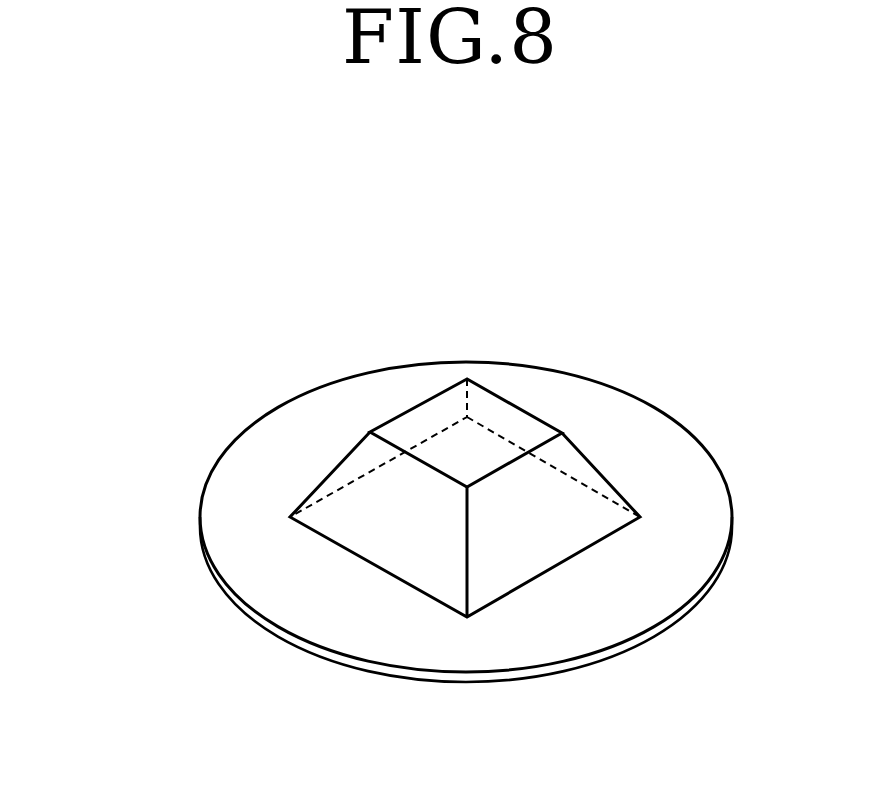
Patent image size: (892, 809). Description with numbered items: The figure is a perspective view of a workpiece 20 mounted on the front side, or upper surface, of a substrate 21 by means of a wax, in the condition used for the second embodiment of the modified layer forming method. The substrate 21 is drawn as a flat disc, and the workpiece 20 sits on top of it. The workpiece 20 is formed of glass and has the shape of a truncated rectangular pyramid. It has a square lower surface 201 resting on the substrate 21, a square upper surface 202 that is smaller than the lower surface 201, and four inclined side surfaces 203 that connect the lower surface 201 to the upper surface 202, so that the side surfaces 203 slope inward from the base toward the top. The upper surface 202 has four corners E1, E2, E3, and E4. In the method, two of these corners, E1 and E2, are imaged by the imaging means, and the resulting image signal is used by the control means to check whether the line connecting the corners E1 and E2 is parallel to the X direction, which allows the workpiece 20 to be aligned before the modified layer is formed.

The substrate 21 is at (197, 494).
The workpiece 20 is at (422, 396).
The lower surface 201 is at (393, 526).
The upper surface 202 is at (488, 412).
The inclined side surfaces 203 is at (368, 457).
The corner E1 is at (368, 430).
The corner E2 is at (467, 486).
The corner E3 is at (467, 378).
The corner E4 is at (573, 430).